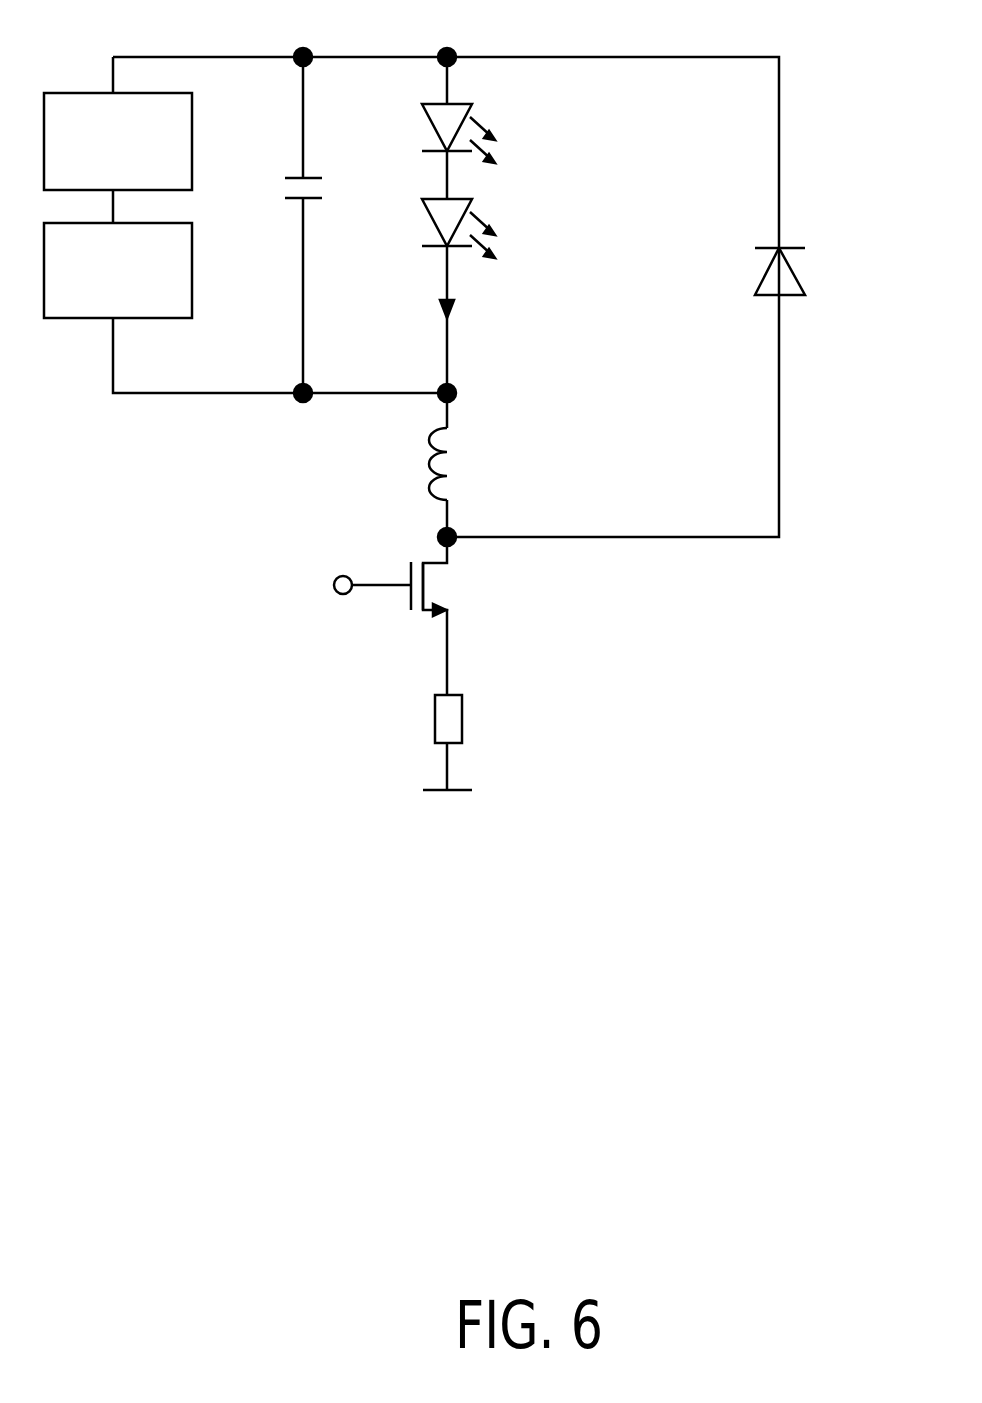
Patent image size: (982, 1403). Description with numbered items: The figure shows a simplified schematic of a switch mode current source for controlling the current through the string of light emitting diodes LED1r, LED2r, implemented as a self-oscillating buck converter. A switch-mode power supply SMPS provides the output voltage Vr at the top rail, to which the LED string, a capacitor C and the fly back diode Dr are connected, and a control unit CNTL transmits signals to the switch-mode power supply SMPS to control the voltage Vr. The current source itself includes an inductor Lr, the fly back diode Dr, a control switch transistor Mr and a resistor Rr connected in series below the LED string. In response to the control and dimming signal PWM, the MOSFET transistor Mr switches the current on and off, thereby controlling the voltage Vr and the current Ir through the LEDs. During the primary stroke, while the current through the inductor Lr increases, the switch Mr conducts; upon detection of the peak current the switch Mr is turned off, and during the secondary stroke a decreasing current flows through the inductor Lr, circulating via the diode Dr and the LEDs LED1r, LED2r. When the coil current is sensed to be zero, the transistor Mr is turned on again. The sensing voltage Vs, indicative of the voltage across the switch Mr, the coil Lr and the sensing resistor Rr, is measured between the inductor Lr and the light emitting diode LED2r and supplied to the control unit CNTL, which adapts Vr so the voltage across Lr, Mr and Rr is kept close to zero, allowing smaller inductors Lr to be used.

The switch-mode power supply SMPS is at (118, 141).
The control unit CNTL is at (118, 270).
The output voltage Vr is at (377, 35).
The sensing voltage Vs is at (375, 375).
The capacitor C is at (320, 225).
The light emitting diode LED1r is at (516, 133).
The light emitting diode LED2r is at (516, 228).
The LED current Ir is at (460, 301).
The fly back diode Dr is at (806, 272).
The inductor Lr is at (424, 487).
The control switch transistor Mr is at (454, 589).
The pulse width modulating signal PWM is at (255, 584).
The resistor Rr is at (470, 719).